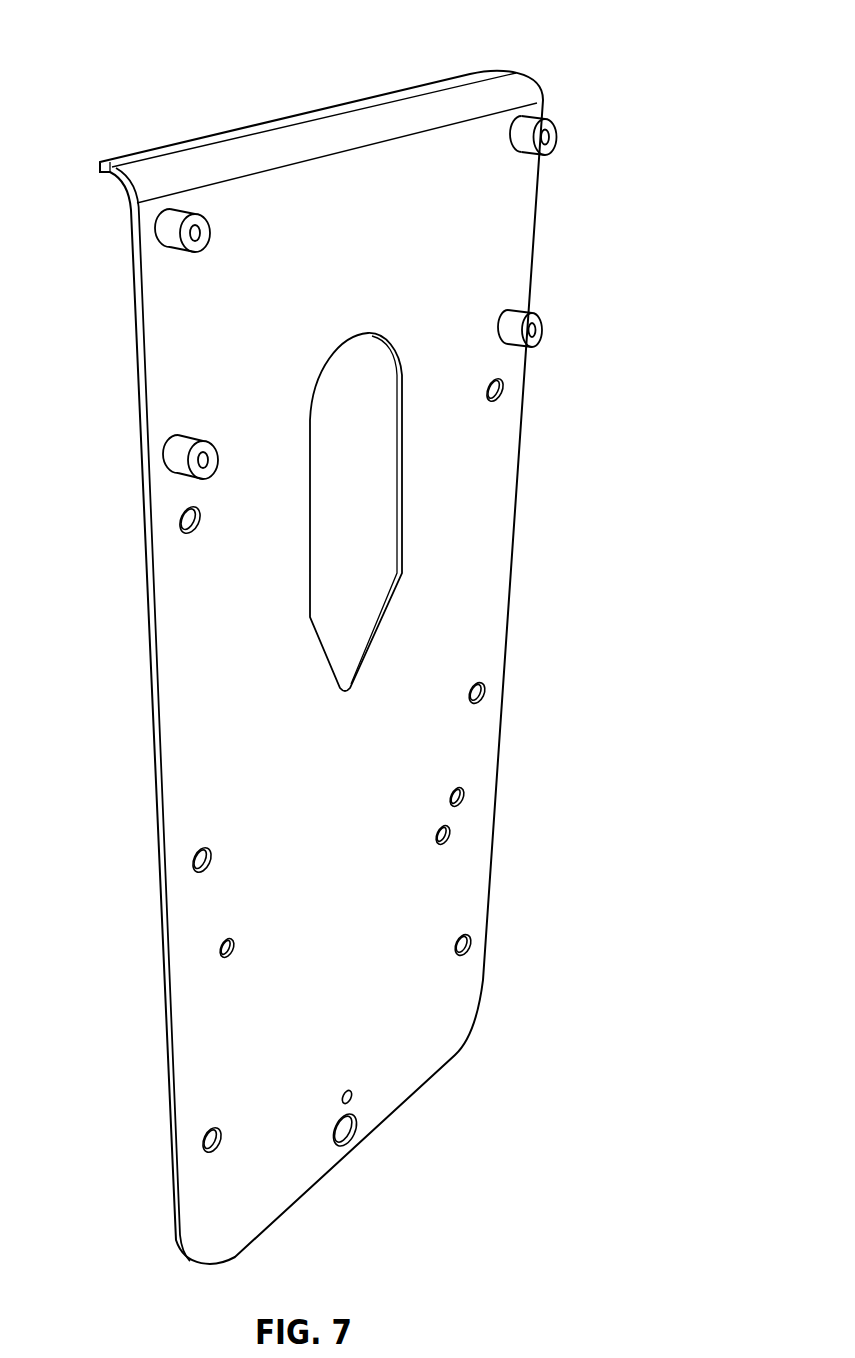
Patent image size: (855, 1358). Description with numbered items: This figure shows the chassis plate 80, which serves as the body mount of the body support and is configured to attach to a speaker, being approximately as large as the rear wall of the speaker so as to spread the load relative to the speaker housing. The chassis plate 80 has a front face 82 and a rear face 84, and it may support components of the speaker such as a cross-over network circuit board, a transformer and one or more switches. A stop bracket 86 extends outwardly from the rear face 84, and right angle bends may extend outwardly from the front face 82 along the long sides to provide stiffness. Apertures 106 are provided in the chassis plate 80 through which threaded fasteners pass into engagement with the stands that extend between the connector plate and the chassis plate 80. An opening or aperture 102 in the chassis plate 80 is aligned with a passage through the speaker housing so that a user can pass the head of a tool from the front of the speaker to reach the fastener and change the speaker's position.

The chassis plate 80 is at (305, 636).
The front face 82 is at (190, 773).
The rear face 84 is at (147, 688).
The stop bracket 86 is at (355, 93).
The aperture 102 is at (390, 605).
The apertures 106 is at (197, 873).